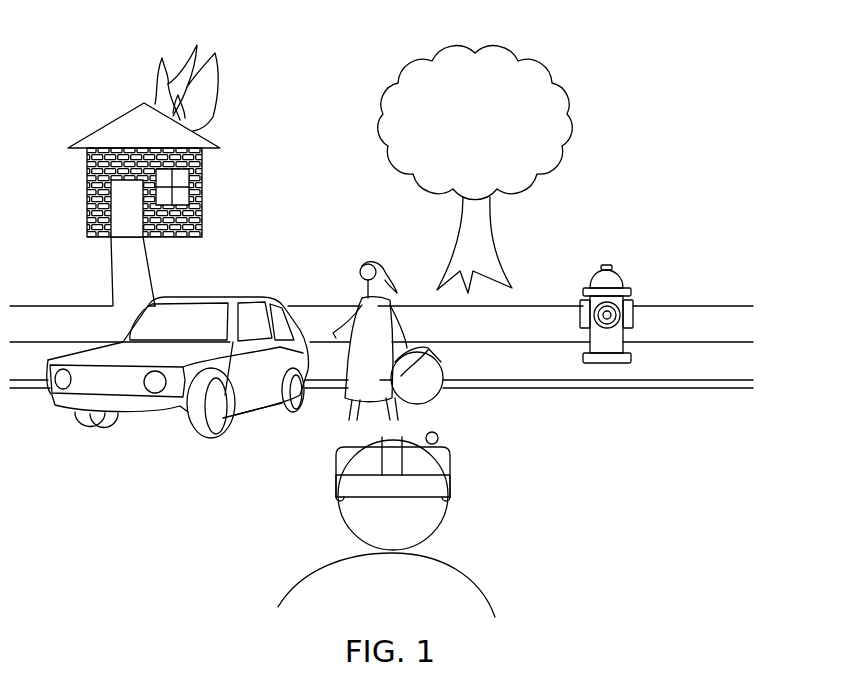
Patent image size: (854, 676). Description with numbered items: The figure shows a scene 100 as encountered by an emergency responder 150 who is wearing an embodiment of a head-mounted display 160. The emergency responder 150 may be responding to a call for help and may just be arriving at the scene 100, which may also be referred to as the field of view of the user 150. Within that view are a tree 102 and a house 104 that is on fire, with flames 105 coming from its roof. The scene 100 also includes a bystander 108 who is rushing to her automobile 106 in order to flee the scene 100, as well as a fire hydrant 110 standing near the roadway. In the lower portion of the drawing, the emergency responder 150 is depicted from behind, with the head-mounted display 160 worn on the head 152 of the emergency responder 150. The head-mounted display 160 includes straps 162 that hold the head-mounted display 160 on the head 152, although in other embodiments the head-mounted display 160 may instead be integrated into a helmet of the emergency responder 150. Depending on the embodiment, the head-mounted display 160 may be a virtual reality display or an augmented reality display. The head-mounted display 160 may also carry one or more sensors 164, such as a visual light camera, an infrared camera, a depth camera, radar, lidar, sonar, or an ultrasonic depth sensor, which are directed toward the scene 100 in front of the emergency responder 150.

The scene 100 is at (647, 88).
The tree 102 is at (462, 128).
The house 104 is at (157, 144).
The flames 105 is at (207, 78).
The automobile 106 is at (167, 334).
The bystander 108 is at (362, 268).
The fire hydrant 110 is at (609, 283).
The emergency responder 150 is at (403, 512).
The head 152 is at (372, 514).
The head-mounted display 160 is at (345, 460).
The straps 162 is at (436, 484).
The sensors 164 is at (439, 435).